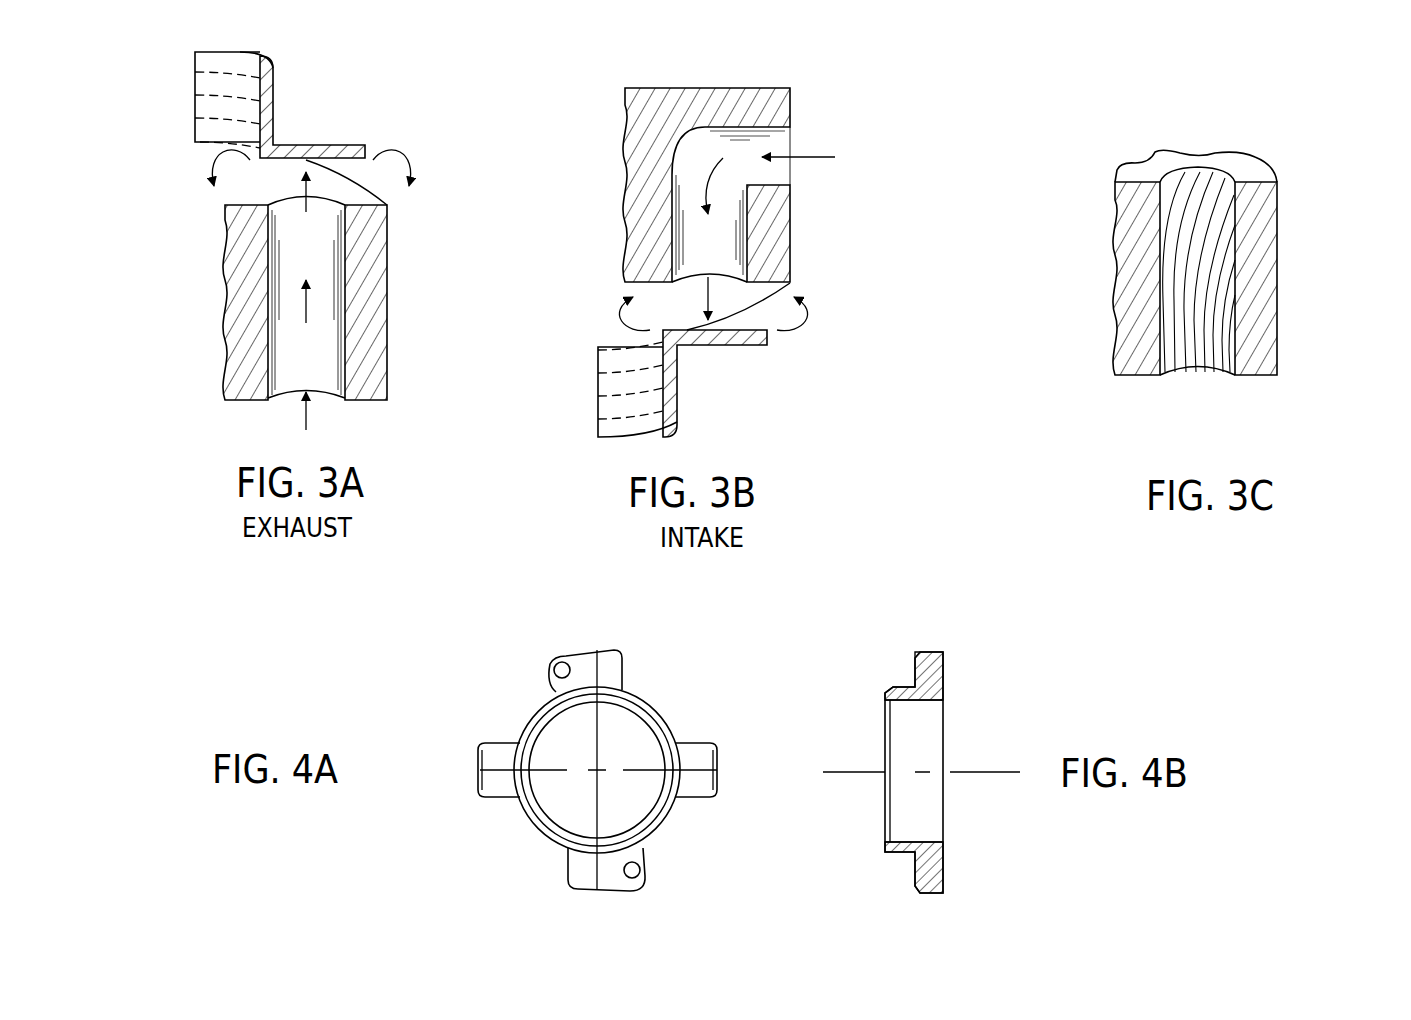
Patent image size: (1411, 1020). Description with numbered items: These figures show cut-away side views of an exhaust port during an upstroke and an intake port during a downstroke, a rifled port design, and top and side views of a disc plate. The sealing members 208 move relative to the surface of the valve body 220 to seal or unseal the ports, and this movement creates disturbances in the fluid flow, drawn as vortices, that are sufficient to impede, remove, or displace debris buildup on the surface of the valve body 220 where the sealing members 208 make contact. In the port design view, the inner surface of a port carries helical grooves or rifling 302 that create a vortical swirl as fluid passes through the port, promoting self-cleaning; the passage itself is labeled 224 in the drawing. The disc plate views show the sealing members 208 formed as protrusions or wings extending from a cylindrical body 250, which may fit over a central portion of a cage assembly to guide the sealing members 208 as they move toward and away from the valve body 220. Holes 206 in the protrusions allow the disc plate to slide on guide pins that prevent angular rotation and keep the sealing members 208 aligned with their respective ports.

In FIG. 4A, the holes 206 is at (550, 675).
In FIG. 3A, the sealing members 208 is at (343, 145).
In FIG. 3B, the sealing members 208 is at (747, 347).
In FIG. 4A, the sealing members 208 is at (503, 758).
In FIG. 4B, the sealing members 208 is at (943, 660).
In FIG. 3A, the valve body 220 is at (246, 327).
In FIG. 3B, the valve body 220 is at (647, 165).
In FIG. 3C, the valve body 220 is at (1133, 277).
In FIG. 3A, the port passage 224 is at (327, 345).
In FIG. 3B, the port passage 224 is at (767, 135).
In FIG. 3C, the port passage 224 is at (1195, 363).
In FIG. 3A, the cylindrical body 250 is at (212, 88).
In FIG. 3B, the cylindrical body 250 is at (615, 400).
In FIG. 4A, the cylindrical body 250 is at (643, 717).
In FIG. 4B, the cylindrical body 250 is at (890, 850).
In FIG. 3C, the rifling 302 is at (1198, 290).